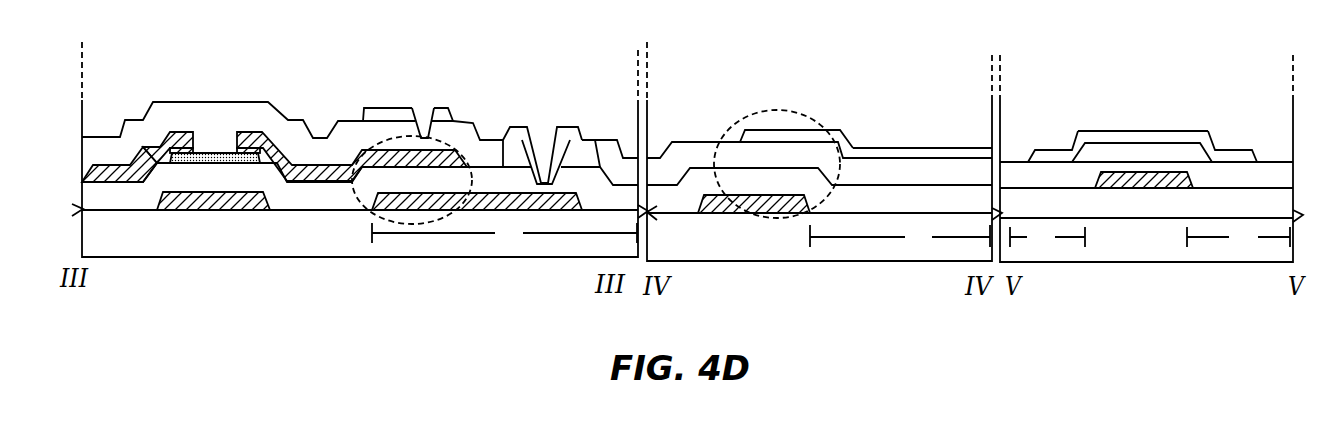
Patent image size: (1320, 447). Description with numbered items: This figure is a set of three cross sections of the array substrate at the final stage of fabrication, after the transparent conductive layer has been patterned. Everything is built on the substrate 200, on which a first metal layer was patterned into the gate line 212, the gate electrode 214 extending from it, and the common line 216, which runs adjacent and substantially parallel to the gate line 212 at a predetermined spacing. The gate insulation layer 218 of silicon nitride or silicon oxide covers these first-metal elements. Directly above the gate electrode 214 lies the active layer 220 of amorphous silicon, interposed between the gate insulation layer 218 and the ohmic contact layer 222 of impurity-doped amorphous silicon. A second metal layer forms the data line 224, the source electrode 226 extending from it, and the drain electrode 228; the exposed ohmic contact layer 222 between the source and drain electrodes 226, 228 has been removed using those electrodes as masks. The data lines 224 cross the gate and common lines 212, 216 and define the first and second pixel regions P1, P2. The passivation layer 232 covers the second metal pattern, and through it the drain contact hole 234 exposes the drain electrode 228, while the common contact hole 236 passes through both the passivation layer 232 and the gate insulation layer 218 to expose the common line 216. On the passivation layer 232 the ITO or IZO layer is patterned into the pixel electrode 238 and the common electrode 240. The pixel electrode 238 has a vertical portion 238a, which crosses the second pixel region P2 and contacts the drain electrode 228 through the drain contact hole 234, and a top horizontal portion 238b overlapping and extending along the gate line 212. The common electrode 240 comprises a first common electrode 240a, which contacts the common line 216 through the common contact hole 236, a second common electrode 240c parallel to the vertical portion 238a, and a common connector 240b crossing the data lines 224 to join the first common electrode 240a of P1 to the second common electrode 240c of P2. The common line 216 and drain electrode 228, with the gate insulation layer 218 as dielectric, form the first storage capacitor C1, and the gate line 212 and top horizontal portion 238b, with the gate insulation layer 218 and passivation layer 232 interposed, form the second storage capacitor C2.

The substrate 200 is at (347, 247).
The gate line 212 is at (722, 213).
The gate electrode 214 is at (217, 205).
The common line 216 is at (548, 210).
The gate insulation layer 218 is at (503, 165).
The active layer 220 is at (215, 158).
The ohmic contact layer 222 is at (260, 148).
The data line 224 is at (113, 158).
The source electrode 226 is at (178, 130).
The drain electrode 228 is at (245, 130).
The passivation layer 232 is at (345, 120).
The drain contact hole 234 is at (423, 101).
The common contact hole 236 is at (542, 135).
The pixel electrode 238 is at (898, 65).
The vertical portion 238a is at (373, 108).
The top horizontal portion 238b is at (797, 130).
The common electrode 240 is at (1225, 75).
The first common electrode 240a is at (567, 127).
The common connector 240b is at (1143, 131).
The second common electrode 240c is at (1230, 148).
The first storage capacitor C1 is at (413, 224).
The second storage capacitor C2 is at (792, 218).
The first pixel region P1 is at (1047, 238).
The second pixel region P2 is at (831, 236).